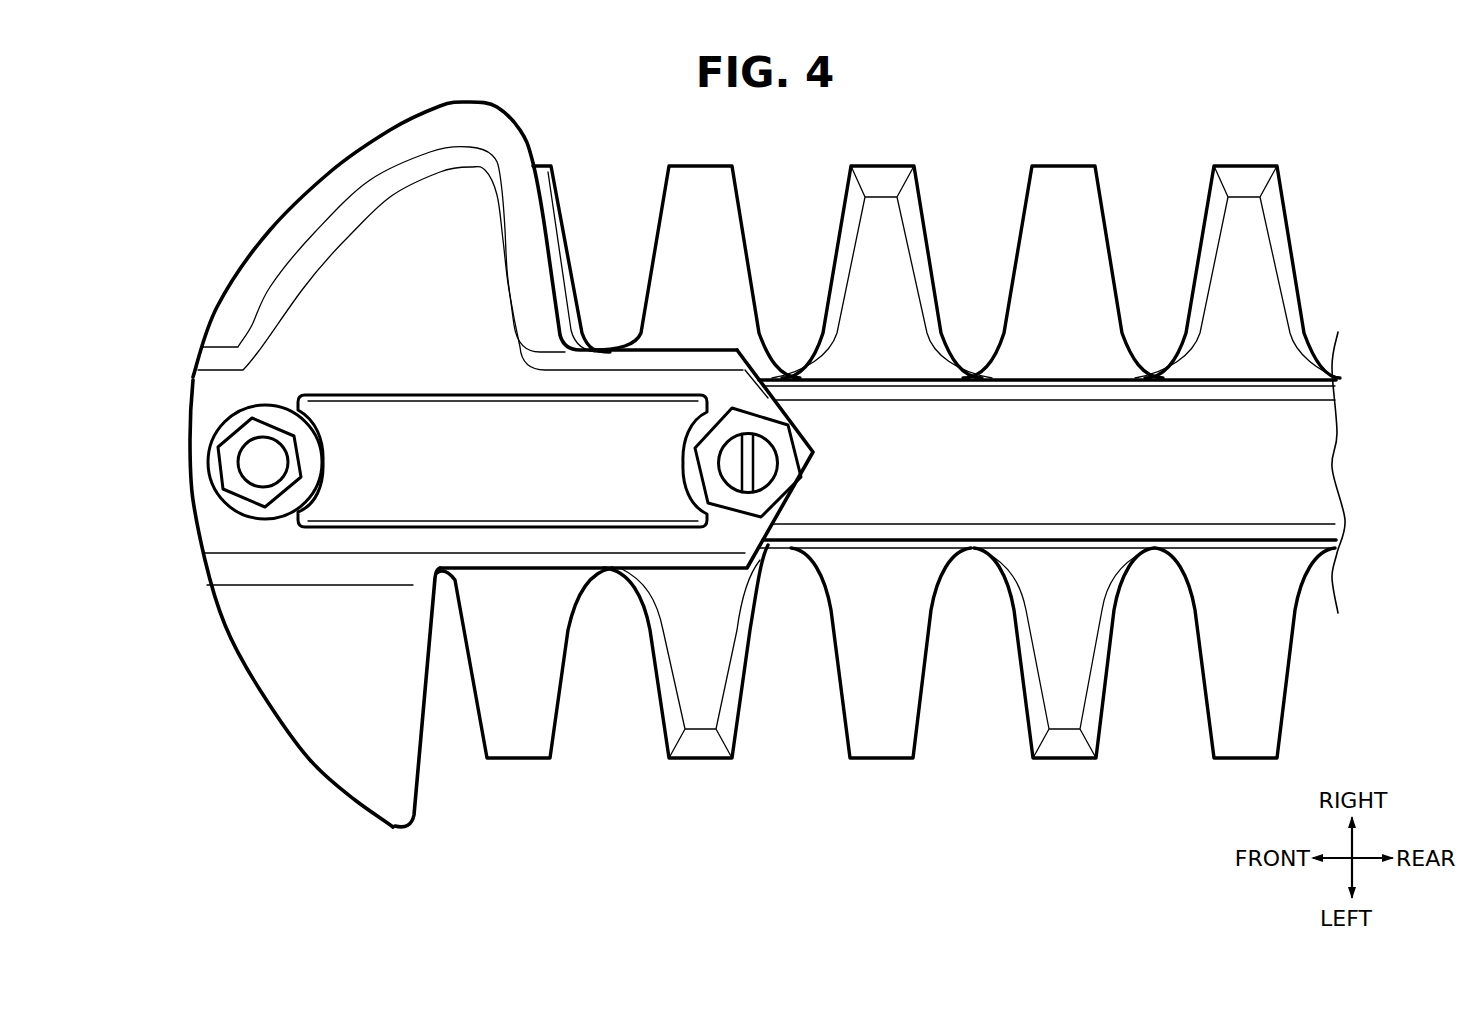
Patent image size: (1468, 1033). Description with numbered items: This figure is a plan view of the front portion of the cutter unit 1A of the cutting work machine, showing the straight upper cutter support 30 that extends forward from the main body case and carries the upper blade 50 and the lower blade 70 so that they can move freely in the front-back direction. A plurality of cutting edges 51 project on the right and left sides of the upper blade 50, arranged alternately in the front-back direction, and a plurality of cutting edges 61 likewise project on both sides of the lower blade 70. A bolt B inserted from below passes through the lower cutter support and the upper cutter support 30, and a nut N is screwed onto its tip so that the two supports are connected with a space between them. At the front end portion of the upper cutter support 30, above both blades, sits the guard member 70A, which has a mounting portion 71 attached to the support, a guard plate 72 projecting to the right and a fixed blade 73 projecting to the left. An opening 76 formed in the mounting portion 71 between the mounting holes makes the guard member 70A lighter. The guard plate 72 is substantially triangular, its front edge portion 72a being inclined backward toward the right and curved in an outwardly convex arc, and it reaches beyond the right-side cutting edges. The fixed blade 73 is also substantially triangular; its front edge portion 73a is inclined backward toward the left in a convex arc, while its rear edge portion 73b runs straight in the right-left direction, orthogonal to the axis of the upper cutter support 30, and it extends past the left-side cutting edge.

The hedge trimmer blade assembly 1A is at (186, 171).
The upper cutter support 30 is at (1052, 422).
The upper blade 50 is at (765, 716).
The cutting edges 51 is at (556, 215).
The cutting edges 61 is at (710, 178).
The second blade 70 is at (582, 716).
The guard member 70A is at (198, 297).
The mounting portion 71 is at (685, 378).
The guard plate 72 is at (420, 230).
The front edge portion 72a is at (290, 218).
The fixed blade 73 is at (335, 718).
The front edge portion 73a is at (243, 677).
The rear edge portion 73b is at (421, 760).
The opening 76 is at (596, 410).
The nut N is at (242, 441).
The bolt B is at (254, 464).